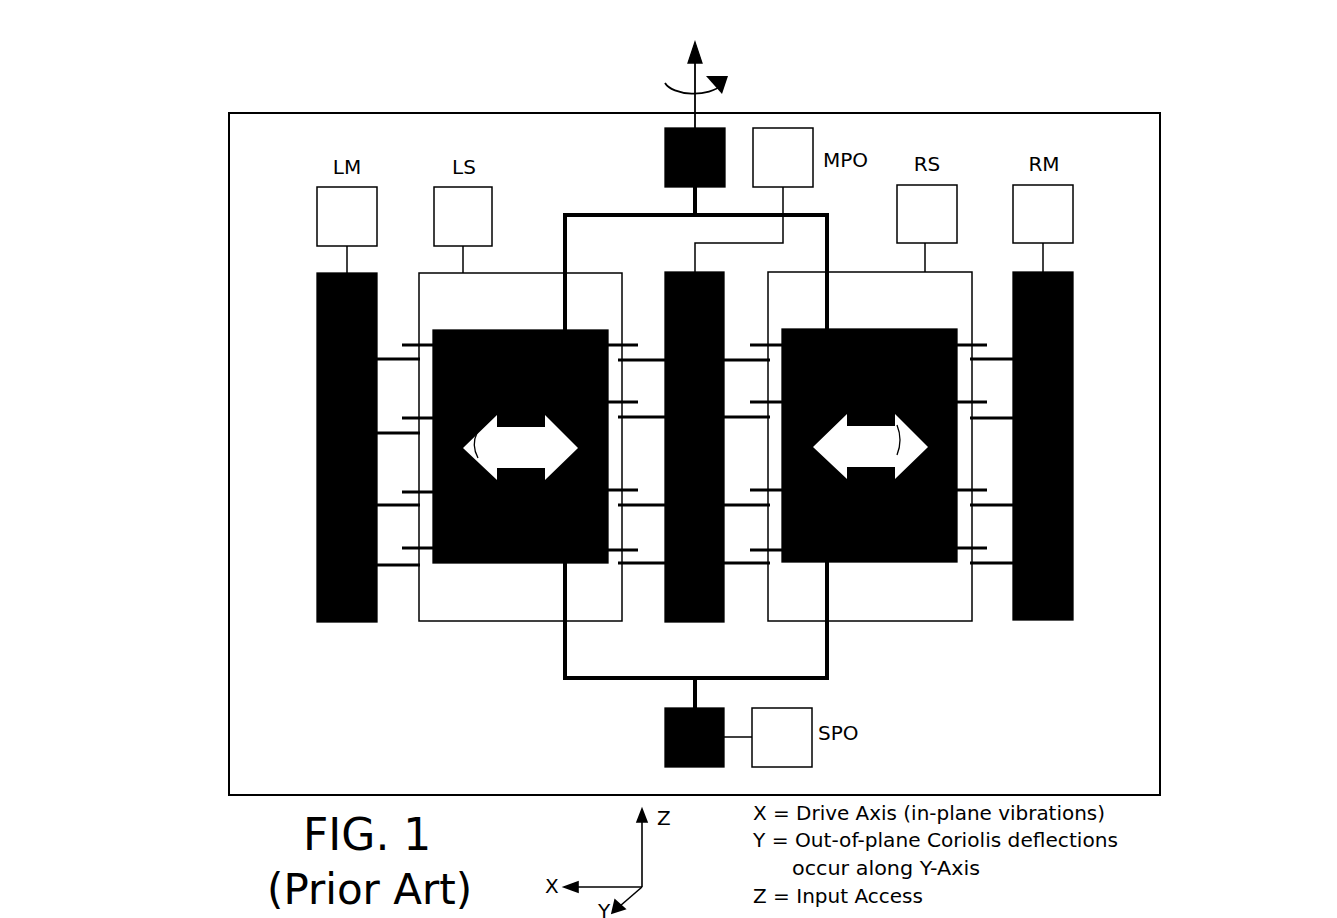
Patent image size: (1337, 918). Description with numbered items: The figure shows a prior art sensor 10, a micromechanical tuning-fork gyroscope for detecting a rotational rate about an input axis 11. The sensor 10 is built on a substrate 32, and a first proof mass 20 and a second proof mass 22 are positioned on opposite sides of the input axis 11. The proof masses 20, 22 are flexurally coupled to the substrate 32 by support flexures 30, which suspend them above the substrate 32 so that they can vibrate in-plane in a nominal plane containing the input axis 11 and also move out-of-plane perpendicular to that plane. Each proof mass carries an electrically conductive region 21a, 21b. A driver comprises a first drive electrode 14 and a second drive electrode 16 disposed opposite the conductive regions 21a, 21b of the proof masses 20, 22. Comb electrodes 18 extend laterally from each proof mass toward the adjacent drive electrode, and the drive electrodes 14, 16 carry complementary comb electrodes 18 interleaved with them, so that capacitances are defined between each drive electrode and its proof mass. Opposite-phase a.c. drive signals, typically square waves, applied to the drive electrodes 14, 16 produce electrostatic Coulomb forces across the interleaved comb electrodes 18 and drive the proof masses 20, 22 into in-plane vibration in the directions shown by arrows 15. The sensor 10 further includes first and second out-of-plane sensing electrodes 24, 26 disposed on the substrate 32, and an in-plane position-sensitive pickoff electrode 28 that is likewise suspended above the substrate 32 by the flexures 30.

The sensor 10 is at (1264, 650).
The input axis 11 is at (692, 83).
The first drive electrode 14 is at (315, 463).
The arrows 15 is at (433, 387).
The second drive electrode 16 is at (1073, 415).
The comb electrodes 18 is at (382, 565).
The first proof mass 20 is at (497, 565).
The electrically conductive region 21a is at (444, 330).
The electrically conductive region 21b is at (943, 328).
The second proof mass 22 is at (892, 563).
The first out-of-plane sensing electrode 24 is at (505, 272).
The second out-of-plane sensing electrode 26 is at (953, 271).
The in-plane position-sensitive pickoff electrode 28 is at (667, 278).
The support flexures 30 is at (623, 214).
The substrate 32 is at (694, 454).